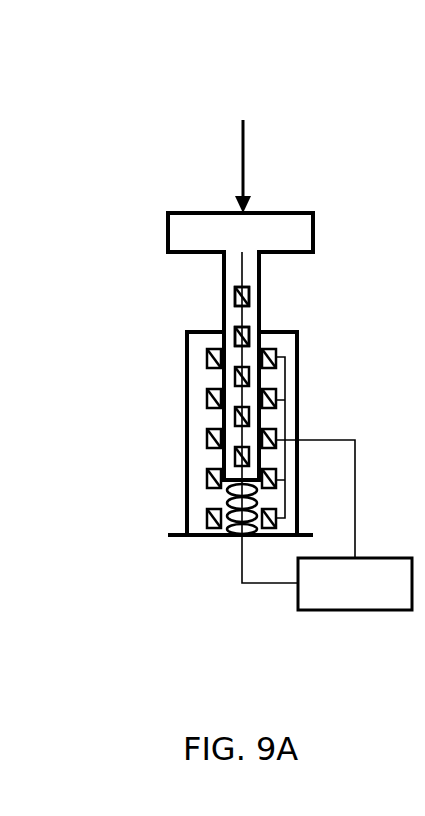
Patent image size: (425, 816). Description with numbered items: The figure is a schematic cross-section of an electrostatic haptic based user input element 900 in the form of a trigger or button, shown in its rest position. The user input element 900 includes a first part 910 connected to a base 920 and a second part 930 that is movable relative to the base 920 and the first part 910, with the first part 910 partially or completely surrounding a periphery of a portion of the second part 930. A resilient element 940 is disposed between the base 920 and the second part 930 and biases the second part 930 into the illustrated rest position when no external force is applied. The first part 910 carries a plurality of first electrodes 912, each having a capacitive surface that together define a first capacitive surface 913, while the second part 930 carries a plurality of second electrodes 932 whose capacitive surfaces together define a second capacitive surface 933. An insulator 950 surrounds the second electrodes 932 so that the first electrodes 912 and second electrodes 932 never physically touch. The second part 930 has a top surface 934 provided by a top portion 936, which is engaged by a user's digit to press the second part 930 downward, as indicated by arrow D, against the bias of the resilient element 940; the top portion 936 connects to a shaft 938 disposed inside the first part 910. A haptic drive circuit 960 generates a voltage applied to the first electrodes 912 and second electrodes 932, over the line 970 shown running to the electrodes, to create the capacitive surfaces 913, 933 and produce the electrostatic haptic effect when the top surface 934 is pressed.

The user input element 900 is at (93, 100).
The arrow D is at (244, 163).
The first part 910 is at (151, 358).
The first electrodes 912 is at (207, 437).
The first capacitive surface 913 is at (226, 487).
The base 920 is at (197, 537).
The second part 930 is at (146, 252).
The second electrodes 932 is at (234, 330).
The second capacitive surface 933 is at (249, 297).
The top surface 934 is at (220, 212).
The top portion 936 is at (290, 227).
The shaft 938 is at (262, 318).
The resilient element 940 is at (235, 537).
The insulator 950 is at (252, 379).
The haptic drive circuit 960 is at (379, 601).
The connecting line 970 is at (268, 428).